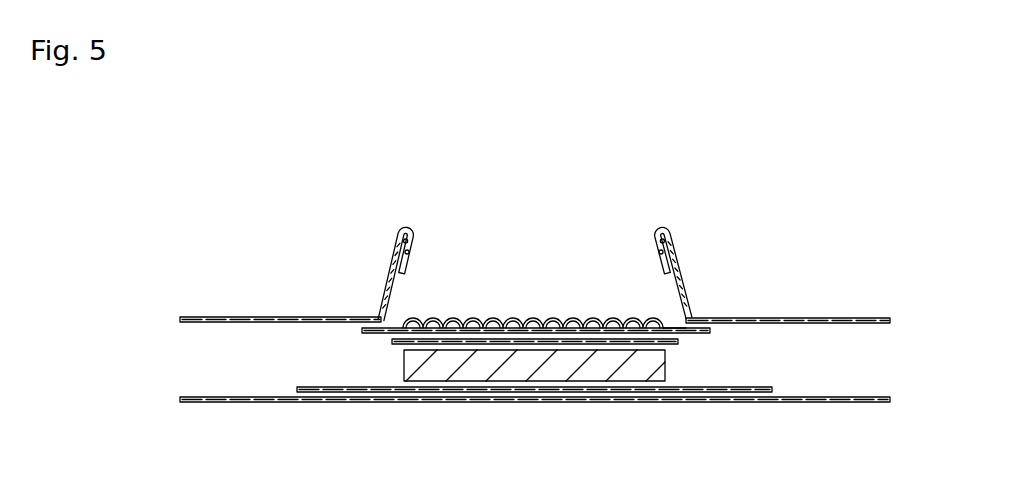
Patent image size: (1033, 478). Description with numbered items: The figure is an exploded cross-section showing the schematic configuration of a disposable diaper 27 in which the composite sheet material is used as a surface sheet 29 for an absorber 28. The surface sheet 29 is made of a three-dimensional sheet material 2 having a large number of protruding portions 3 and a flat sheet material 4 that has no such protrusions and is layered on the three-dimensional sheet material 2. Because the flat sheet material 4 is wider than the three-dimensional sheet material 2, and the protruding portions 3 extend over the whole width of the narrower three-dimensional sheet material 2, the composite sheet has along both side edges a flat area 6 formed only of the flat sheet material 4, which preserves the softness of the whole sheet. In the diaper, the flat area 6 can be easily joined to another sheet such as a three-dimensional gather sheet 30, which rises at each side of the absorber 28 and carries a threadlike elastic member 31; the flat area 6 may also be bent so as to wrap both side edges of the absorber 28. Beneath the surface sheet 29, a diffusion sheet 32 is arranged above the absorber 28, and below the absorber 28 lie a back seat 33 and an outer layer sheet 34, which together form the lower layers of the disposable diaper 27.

The three-dimensional sheet material 2 is at (402, 323).
The protruding portions 3 is at (482, 318).
The flat sheet material 4 is at (712, 331).
The flat area 6 is at (670, 312).
The disposable diaper 27 is at (857, 250).
The absorber 28 is at (667, 368).
The surface sheet 29 is at (532, 241).
The three-dimensional gather sheet 30 is at (690, 298).
The threadlike elastic member 31 is at (683, 246).
The diffusion sheet 32 is at (392, 341).
The back seat 33 is at (300, 387).
The outer layer sheet 34 is at (522, 403).